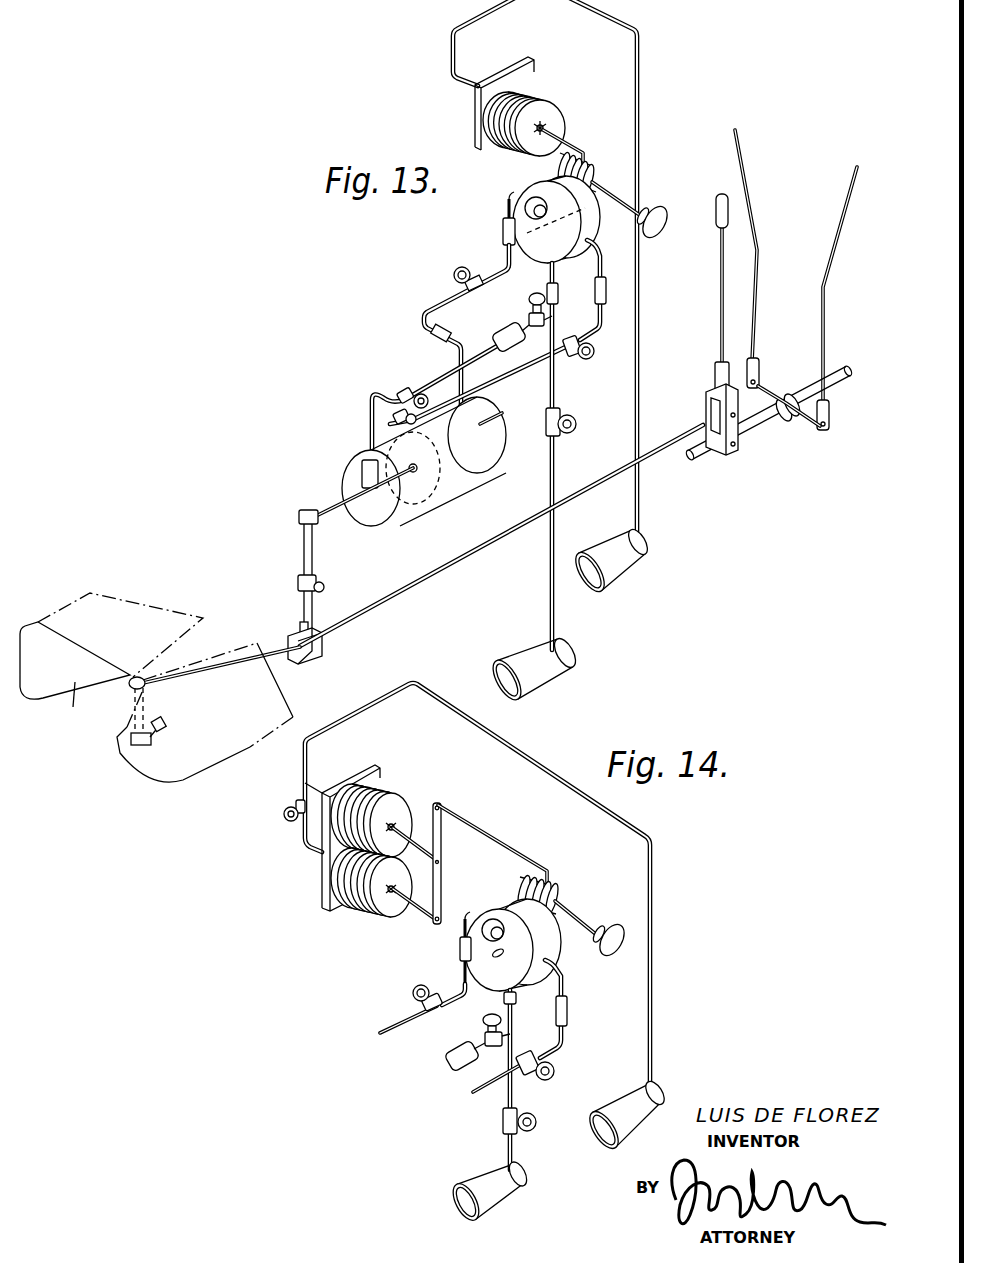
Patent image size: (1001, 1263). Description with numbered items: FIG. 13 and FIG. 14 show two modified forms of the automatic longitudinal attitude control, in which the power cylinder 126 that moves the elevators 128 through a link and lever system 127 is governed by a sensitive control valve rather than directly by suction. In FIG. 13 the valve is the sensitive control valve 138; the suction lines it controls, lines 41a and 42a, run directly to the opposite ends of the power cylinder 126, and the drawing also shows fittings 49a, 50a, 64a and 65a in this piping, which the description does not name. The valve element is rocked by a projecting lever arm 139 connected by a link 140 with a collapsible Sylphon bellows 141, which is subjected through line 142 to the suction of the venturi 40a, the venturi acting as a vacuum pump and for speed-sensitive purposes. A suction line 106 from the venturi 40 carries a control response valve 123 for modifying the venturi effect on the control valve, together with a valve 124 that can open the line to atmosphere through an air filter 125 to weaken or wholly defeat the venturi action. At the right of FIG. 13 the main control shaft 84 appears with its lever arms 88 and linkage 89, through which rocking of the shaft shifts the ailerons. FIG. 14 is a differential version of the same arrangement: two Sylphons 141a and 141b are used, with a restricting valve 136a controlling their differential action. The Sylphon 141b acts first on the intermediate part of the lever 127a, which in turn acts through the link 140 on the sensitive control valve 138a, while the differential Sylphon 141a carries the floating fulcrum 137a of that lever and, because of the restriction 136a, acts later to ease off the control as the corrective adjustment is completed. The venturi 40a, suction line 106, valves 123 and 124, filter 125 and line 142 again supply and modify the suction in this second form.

In FIG. 13, the collapsible Sylphon bellows 141 is at (538, 93).
In FIG. 14, the differential Sylphon 141a is at (357, 903).
In FIG. 14, the Sylphon 141b is at (388, 814).
In FIG. 13, the link 140 is at (571, 131).
In FIG. 14, the link 140 is at (500, 824).
In FIG. 13, the projecting lever arm 139 is at (587, 173).
In FIG. 13, the line 142 is at (641, 86).
In FIG. 14, the line 142 is at (652, 890).
In FIG. 13, the sensitive control valve 138 is at (508, 231).
In FIG. 14, the sensitive control valve 138a is at (479, 950).
In FIG. 13, the valve 49a is at (458, 273).
In FIG. 14, the valve 49a is at (416, 994).
In FIG. 13, the suction line 41a is at (440, 307).
In FIG. 13, the suction line 42a is at (494, 382).
In FIG. 13, the pipe 64a is at (444, 377).
In FIG. 13, the valve fittings 65a is at (397, 397).
In FIG. 13, the valve 50a is at (580, 354).
In FIG. 14, the valve 50a is at (555, 1069).
In FIG. 13, the valve 124 is at (535, 296).
In FIG. 14, the valve 124 is at (485, 1034).
In FIG. 13, the air filter 125 is at (504, 329).
In FIG. 14, the air filter 125 is at (448, 1062).
In FIG. 13, the control response valve 123 is at (576, 431).
In FIG. 14, the control response valve 123 is at (502, 1118).
In FIG. 13, the suction line 106 is at (548, 578).
In FIG. 14, the suction line 106 is at (507, 1151).
In FIG. 13, the venturi 40 is at (540, 680).
In FIG. 14, the venturi 40 is at (473, 1189).
In FIG. 13, the venturi 40a is at (618, 570).
In FIG. 14, the venturi 40a is at (665, 1088).
In FIG. 13, the power cylinder 126 is at (413, 504).
In FIG. 13, the link and lever system 127 is at (302, 549).
In FIG. 14, the lever 127a is at (442, 849).
In FIG. 14, the floating fulcrum 137a is at (433, 924).
In FIG. 14, the restricting valve 136a is at (284, 818).
In FIG. 13, the elevators 128 is at (122, 730).
In FIG. 13, the linkage 89 is at (822, 301).
In FIG. 13, the main control shaft 84 is at (847, 378).
In FIG. 13, the lever arms 88 is at (807, 413).